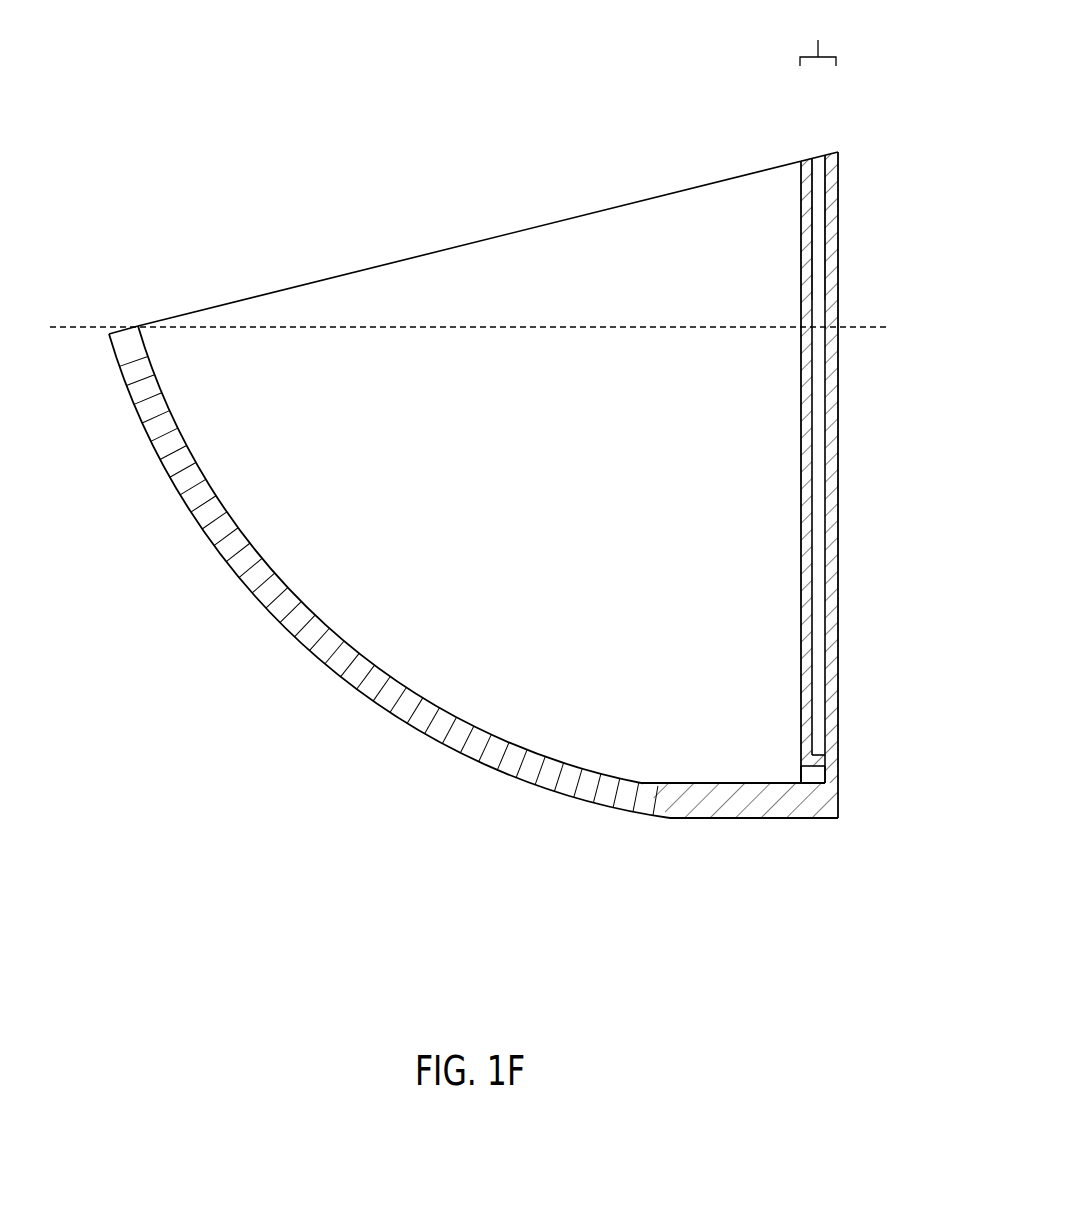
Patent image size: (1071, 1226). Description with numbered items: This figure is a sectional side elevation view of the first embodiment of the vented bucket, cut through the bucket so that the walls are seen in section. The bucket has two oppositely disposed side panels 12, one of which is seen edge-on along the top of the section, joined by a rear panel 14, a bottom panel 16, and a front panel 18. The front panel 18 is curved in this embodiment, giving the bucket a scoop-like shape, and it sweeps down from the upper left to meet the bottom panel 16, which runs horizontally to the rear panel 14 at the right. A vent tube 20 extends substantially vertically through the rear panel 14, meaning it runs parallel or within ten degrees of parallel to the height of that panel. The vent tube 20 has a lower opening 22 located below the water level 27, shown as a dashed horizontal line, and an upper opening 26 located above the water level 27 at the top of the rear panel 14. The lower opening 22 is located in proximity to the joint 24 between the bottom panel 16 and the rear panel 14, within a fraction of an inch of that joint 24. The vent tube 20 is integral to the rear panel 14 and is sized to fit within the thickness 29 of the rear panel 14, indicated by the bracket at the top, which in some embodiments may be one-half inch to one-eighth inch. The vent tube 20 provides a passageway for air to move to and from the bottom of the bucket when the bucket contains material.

The side panel 12 is at (332, 277).
The rear panel 14 is at (838, 213).
The bottom panel 16 is at (667, 818).
The front panel 18 is at (162, 468).
The vent tube 20 is at (812, 278).
The lower opening 22 is at (803, 755).
The joint 24 is at (802, 785).
The upper opening 26 is at (816, 153).
The water level 27 is at (217, 325).
The thickness 29 is at (818, 37).